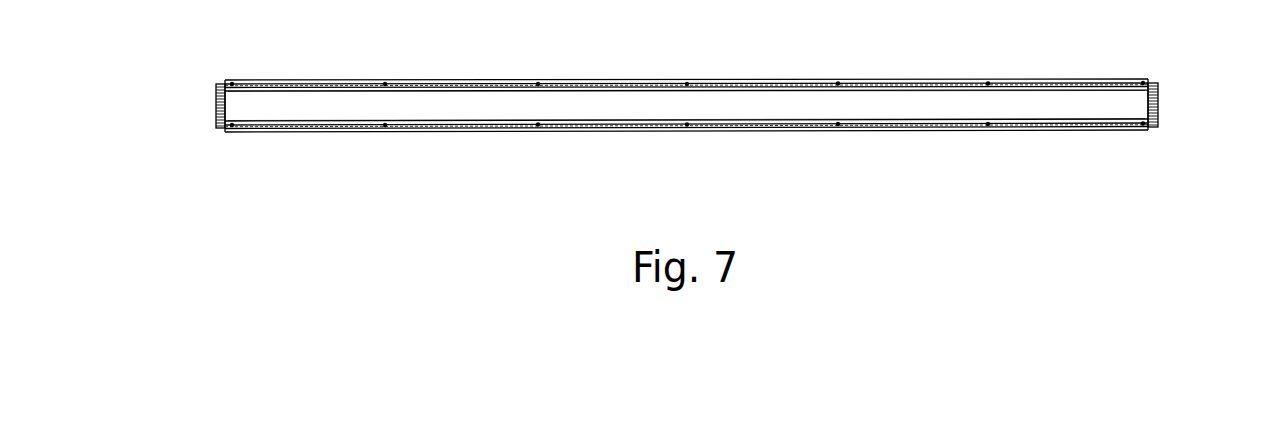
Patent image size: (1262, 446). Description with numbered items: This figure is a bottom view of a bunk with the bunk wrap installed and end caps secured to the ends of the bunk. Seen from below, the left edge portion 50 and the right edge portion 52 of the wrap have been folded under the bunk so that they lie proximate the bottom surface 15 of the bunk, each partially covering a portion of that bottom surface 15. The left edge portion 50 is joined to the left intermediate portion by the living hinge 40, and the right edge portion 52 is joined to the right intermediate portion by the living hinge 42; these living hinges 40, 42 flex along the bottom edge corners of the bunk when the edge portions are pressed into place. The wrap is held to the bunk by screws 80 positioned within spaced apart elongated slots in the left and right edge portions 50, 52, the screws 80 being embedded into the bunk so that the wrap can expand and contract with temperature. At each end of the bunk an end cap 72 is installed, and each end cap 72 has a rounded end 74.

The bottom surface 15 is at (853, 106).
The living hinge 40 is at (457, 80).
The living hinge 42 is at (479, 130).
The left edge portion 50 is at (332, 80).
The right edge portion 52 is at (348, 122).
The end cap 72 is at (203, 108).
The rounded end 74 is at (215, 119).
The screws 80 is at (971, 79).